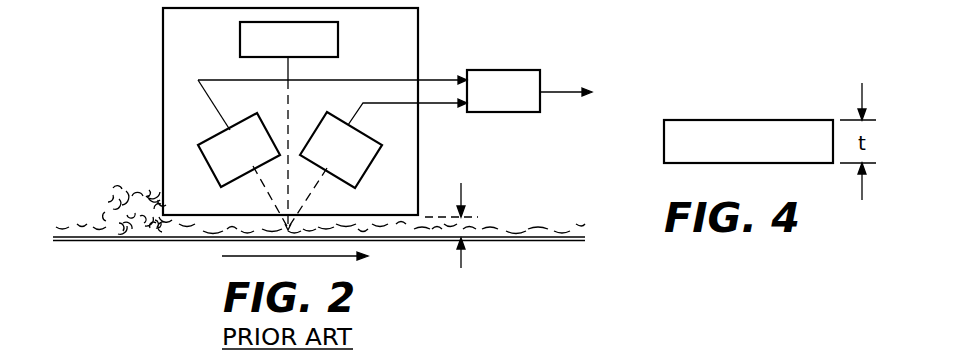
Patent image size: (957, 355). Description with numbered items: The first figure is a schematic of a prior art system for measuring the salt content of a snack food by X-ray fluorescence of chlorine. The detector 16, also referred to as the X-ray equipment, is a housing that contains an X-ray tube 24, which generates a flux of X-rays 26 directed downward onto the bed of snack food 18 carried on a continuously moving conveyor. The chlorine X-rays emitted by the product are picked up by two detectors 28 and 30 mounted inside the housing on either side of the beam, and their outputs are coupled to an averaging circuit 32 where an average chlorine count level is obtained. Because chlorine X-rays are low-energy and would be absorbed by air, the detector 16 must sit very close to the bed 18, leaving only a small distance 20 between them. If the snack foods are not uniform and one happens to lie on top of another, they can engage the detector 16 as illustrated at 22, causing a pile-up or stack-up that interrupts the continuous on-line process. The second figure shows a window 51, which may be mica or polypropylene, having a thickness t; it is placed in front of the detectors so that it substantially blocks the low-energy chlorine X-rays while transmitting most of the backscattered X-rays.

In FIG. 2, the detector 16 is at (163, 45).
In FIG. 2, the X-ray tube 24 is at (240, 41).
In FIG. 2, the flux of X-rays 26 is at (288, 93).
In FIG. 2, the detector 28 is at (212, 165).
In FIG. 2, the detector 30 is at (372, 163).
In FIG. 2, the averaging circuit 32 is at (505, 70).
In FIG. 2, the engagement location 22 is at (133, 190).
In FIG. 2, the distance 20 is at (475, 220).
In FIG. 2, the bed of snack food 18 is at (518, 230).
In FIG. 4, the window 51 is at (778, 120).